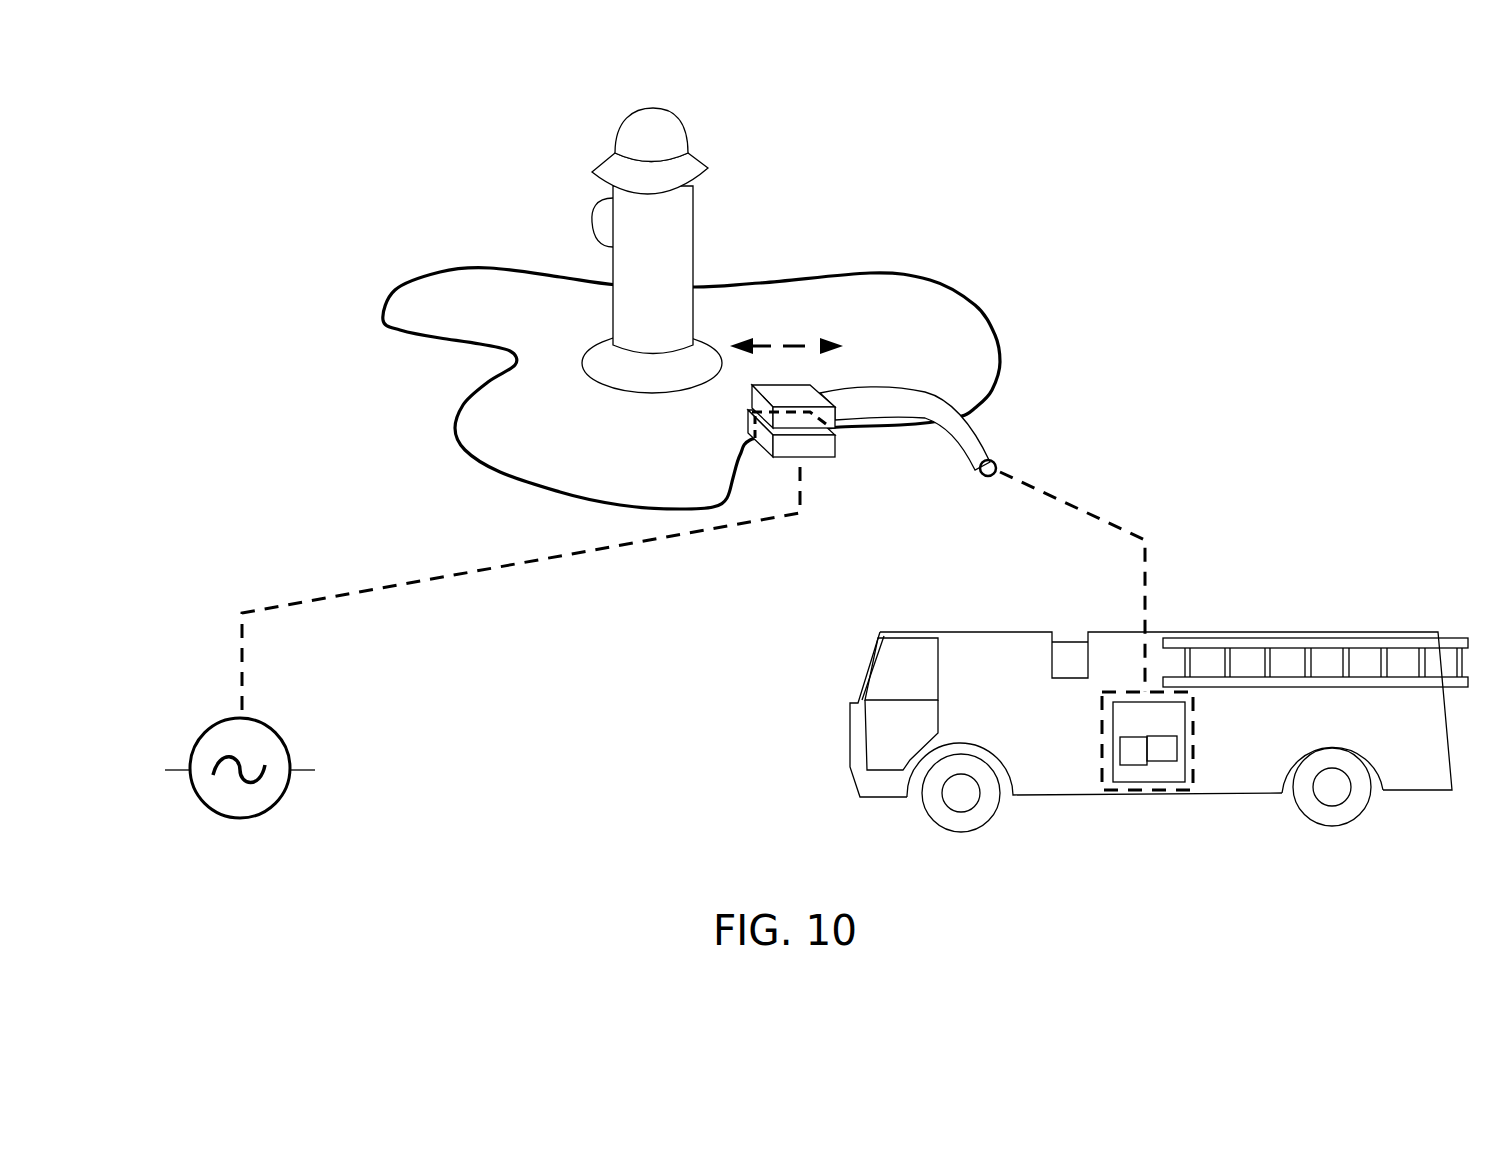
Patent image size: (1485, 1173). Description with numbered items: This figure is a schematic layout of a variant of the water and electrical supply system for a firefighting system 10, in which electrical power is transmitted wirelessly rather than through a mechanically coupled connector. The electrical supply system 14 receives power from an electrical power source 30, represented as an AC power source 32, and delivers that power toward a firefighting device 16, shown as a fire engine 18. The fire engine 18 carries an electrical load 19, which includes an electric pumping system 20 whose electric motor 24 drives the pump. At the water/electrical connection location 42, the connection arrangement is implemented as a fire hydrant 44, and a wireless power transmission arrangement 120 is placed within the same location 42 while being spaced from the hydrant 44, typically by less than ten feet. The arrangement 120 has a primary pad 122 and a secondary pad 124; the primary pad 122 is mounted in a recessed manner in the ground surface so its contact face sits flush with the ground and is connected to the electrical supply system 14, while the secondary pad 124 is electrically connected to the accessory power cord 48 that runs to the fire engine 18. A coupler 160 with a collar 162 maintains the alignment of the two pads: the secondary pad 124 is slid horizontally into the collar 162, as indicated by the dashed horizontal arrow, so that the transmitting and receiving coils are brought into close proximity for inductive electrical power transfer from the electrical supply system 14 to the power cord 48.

The water and electrical supply system for a firefighting system 10 is at (270, 530).
The electrical supply system 14 is at (157, 688).
The firefighting device 16 is at (1258, 560).
The fire engine 18 is at (1340, 630).
The electrical load 19 is at (1200, 782).
The electric pumping system 20 is at (1145, 790).
The electric motor 24 is at (1172, 750).
The electrical power source 30 is at (175, 832).
The AC power source 32 is at (268, 815).
The water/electrical connection location 42 is at (455, 456).
The fire hydrant 44 is at (590, 157).
The accessory power cord 48 is at (975, 440).
The wireless power transmission arrangement 120 is at (855, 448).
The primary pad 122 is at (833, 455).
The secondary pad 124 is at (808, 385).
The coupler 160 is at (735, 410).
The collar 162 is at (750, 418).